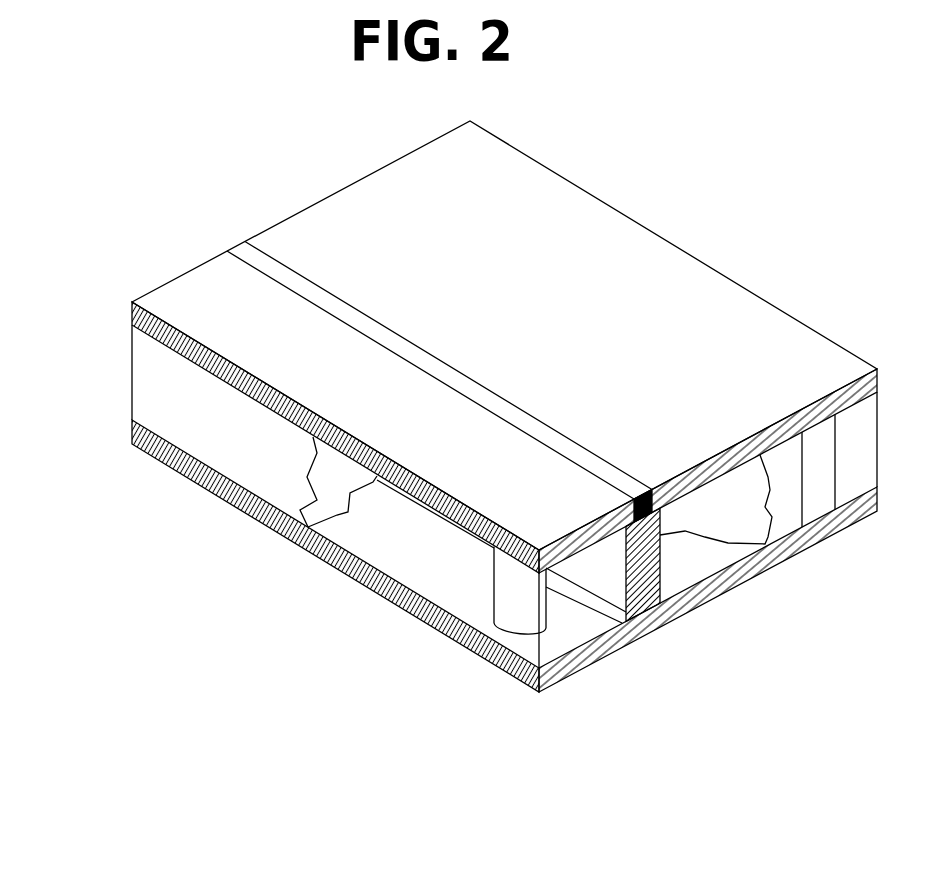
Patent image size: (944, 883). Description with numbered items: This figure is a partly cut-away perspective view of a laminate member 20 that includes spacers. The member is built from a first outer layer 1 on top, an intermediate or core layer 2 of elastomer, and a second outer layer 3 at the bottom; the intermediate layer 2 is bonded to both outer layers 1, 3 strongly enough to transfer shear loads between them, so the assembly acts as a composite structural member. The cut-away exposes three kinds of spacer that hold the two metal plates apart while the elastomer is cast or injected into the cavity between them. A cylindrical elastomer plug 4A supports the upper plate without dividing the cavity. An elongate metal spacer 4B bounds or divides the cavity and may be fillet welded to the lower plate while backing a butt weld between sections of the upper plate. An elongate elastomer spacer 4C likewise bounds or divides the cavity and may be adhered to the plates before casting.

The first outer layer 1 is at (132, 316).
The intermediate layer 2 is at (132, 370).
The second outer layer 3 is at (132, 427).
The cylindrical elastomer plug 4A is at (523, 600).
The elongate metal spacer 4B is at (657, 580).
The elongate elastomer spacer 4C is at (817, 487).
The multilayer structure 20 is at (458, 432).